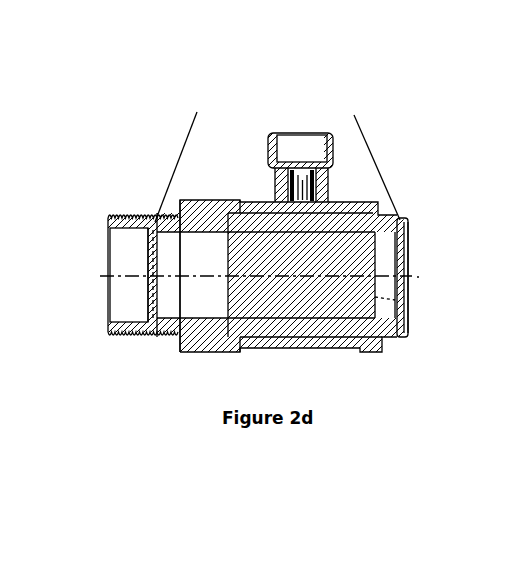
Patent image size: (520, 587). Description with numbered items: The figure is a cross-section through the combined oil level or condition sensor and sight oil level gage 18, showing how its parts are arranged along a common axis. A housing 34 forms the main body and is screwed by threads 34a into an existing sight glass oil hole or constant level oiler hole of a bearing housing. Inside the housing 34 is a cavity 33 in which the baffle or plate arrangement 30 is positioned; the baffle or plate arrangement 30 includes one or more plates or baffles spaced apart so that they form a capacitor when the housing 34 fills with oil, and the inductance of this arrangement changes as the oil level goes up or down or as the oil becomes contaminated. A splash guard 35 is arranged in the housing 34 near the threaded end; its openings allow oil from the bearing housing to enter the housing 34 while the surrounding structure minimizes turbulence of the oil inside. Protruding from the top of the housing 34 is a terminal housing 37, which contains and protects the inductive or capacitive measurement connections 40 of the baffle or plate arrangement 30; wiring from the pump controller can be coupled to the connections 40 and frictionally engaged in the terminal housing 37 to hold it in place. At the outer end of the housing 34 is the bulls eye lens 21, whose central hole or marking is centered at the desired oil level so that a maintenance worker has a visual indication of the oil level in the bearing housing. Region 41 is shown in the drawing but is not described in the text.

The oil level or condition sensor 18 is at (128, 152).
The bulls eye lens 21 is at (412, 244).
The baffle or plate arrangement 30 is at (410, 312).
The cavity 33 is at (156, 338).
The housing 34 is at (342, 352).
The threads 34a is at (128, 339).
The splash guard 35 is at (150, 285).
The terminal housing 37 is at (268, 147).
The inductive or capacitive measurement connections 40 is at (305, 190).
The body boss 41 is at (203, 356).